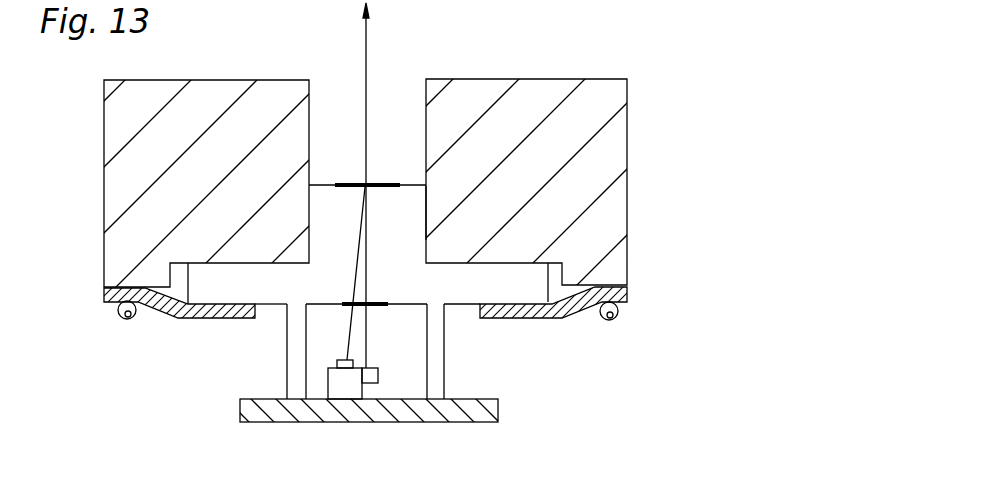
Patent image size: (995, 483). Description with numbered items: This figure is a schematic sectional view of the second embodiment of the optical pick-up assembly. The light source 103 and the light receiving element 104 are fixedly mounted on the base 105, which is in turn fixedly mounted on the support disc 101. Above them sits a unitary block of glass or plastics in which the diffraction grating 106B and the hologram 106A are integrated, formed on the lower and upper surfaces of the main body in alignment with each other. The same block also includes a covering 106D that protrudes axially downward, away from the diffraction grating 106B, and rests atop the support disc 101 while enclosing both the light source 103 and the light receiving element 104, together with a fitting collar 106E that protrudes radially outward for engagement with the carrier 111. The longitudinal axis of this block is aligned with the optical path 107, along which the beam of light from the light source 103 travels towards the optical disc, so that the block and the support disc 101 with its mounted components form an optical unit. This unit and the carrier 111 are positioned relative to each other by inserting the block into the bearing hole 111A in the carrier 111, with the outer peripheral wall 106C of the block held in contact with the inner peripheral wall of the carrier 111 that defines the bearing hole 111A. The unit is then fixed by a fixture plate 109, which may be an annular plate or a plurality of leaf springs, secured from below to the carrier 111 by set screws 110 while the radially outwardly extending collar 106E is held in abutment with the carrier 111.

The support disc 101 is at (488, 410).
The light source 103 is at (378, 378).
The light receiving element 104 is at (340, 369).
The base 105 is at (340, 383).
The hologram 106A is at (352, 184).
The diffraction grating 106B is at (392, 307).
The outer peripheral wall 106C is at (426, 206).
The covering 106D is at (293, 318).
The fitting collar 106E is at (190, 319).
The optical path 107 is at (365, 53).
The fixture plate 109 is at (620, 304).
The set screws 110 is at (597, 303).
The carrier 111 is at (592, 90).
The bearing hole 111A is at (430, 228).